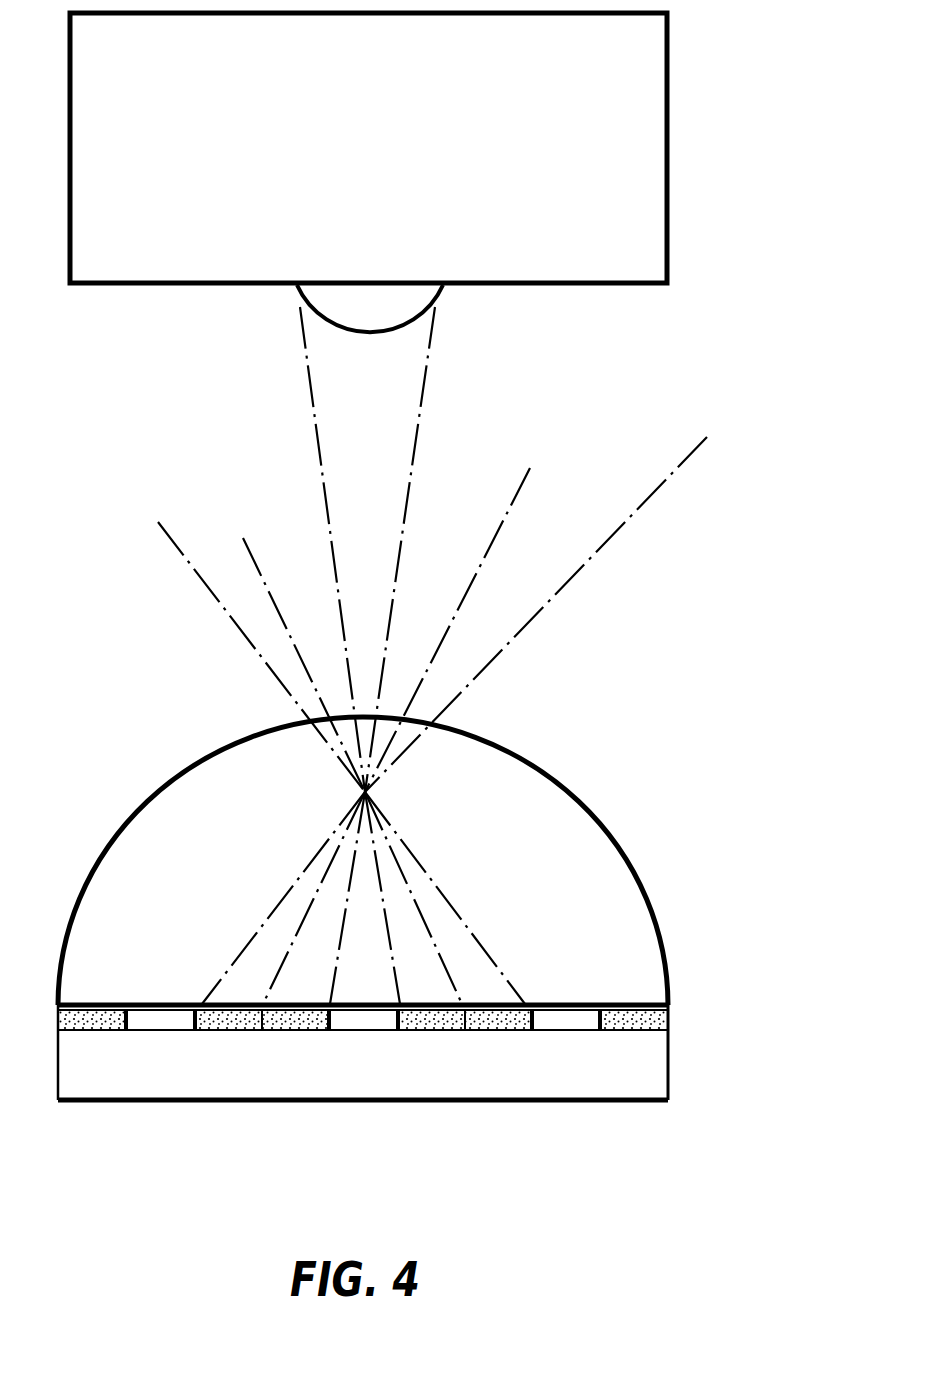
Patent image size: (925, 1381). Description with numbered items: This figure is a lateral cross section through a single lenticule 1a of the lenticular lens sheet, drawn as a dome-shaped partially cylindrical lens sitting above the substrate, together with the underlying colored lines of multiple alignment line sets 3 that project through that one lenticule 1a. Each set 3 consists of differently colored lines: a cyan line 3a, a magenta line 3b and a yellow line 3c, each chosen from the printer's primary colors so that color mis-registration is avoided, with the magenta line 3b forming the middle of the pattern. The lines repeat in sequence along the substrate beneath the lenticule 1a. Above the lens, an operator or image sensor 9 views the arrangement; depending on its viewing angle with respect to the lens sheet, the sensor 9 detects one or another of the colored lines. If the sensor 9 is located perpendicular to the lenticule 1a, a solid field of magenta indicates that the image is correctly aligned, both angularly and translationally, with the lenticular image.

The image sensor 9 is at (667, 118).
The lenticule 1a is at (545, 775).
The set of differently colored lines 3 is at (668, 1055).
The cyan line 3a is at (250, 1024).
The magenta line 3b is at (183, 1024).
The yellow line 3c is at (113, 1024).